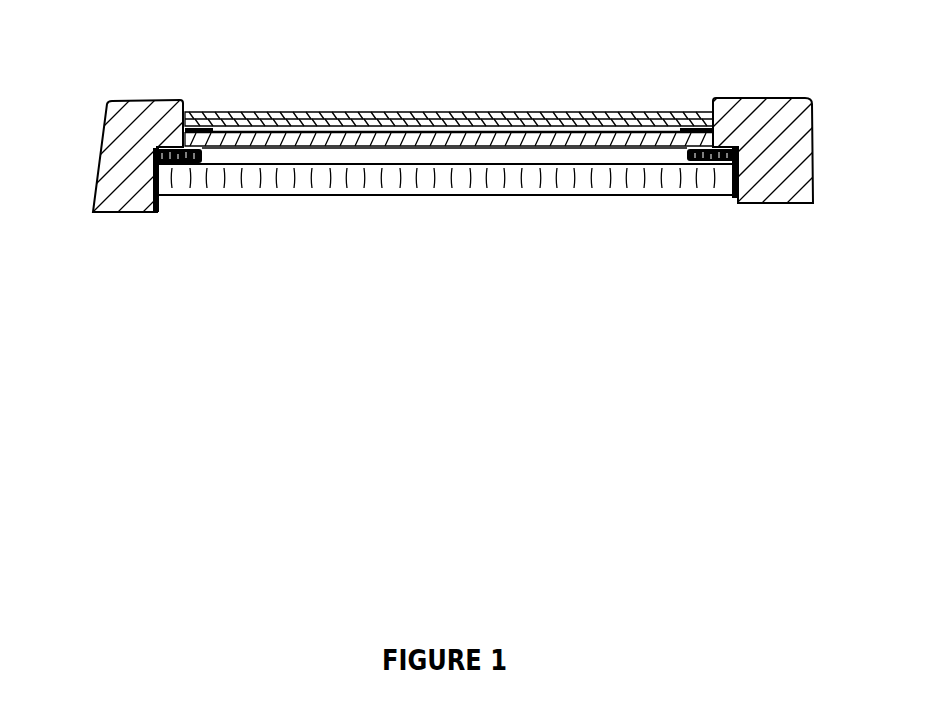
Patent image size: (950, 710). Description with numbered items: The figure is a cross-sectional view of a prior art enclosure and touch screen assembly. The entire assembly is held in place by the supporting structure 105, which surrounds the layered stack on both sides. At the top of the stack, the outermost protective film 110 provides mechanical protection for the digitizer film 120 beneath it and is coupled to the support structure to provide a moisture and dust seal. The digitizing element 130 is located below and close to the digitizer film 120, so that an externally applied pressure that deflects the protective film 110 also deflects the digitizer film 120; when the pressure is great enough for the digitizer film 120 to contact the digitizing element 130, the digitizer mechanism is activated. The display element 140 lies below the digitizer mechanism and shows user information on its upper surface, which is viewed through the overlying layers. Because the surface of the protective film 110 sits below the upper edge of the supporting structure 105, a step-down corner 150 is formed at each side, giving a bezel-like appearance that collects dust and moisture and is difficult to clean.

The supporting structure 105 is at (107, 103).
The outermost protective film 110 is at (270, 112).
The digitizer film 120 is at (352, 123).
The digitizing element 130 is at (453, 142).
The display element 140 is at (453, 197).
The step-down corner 150 is at (186, 108).